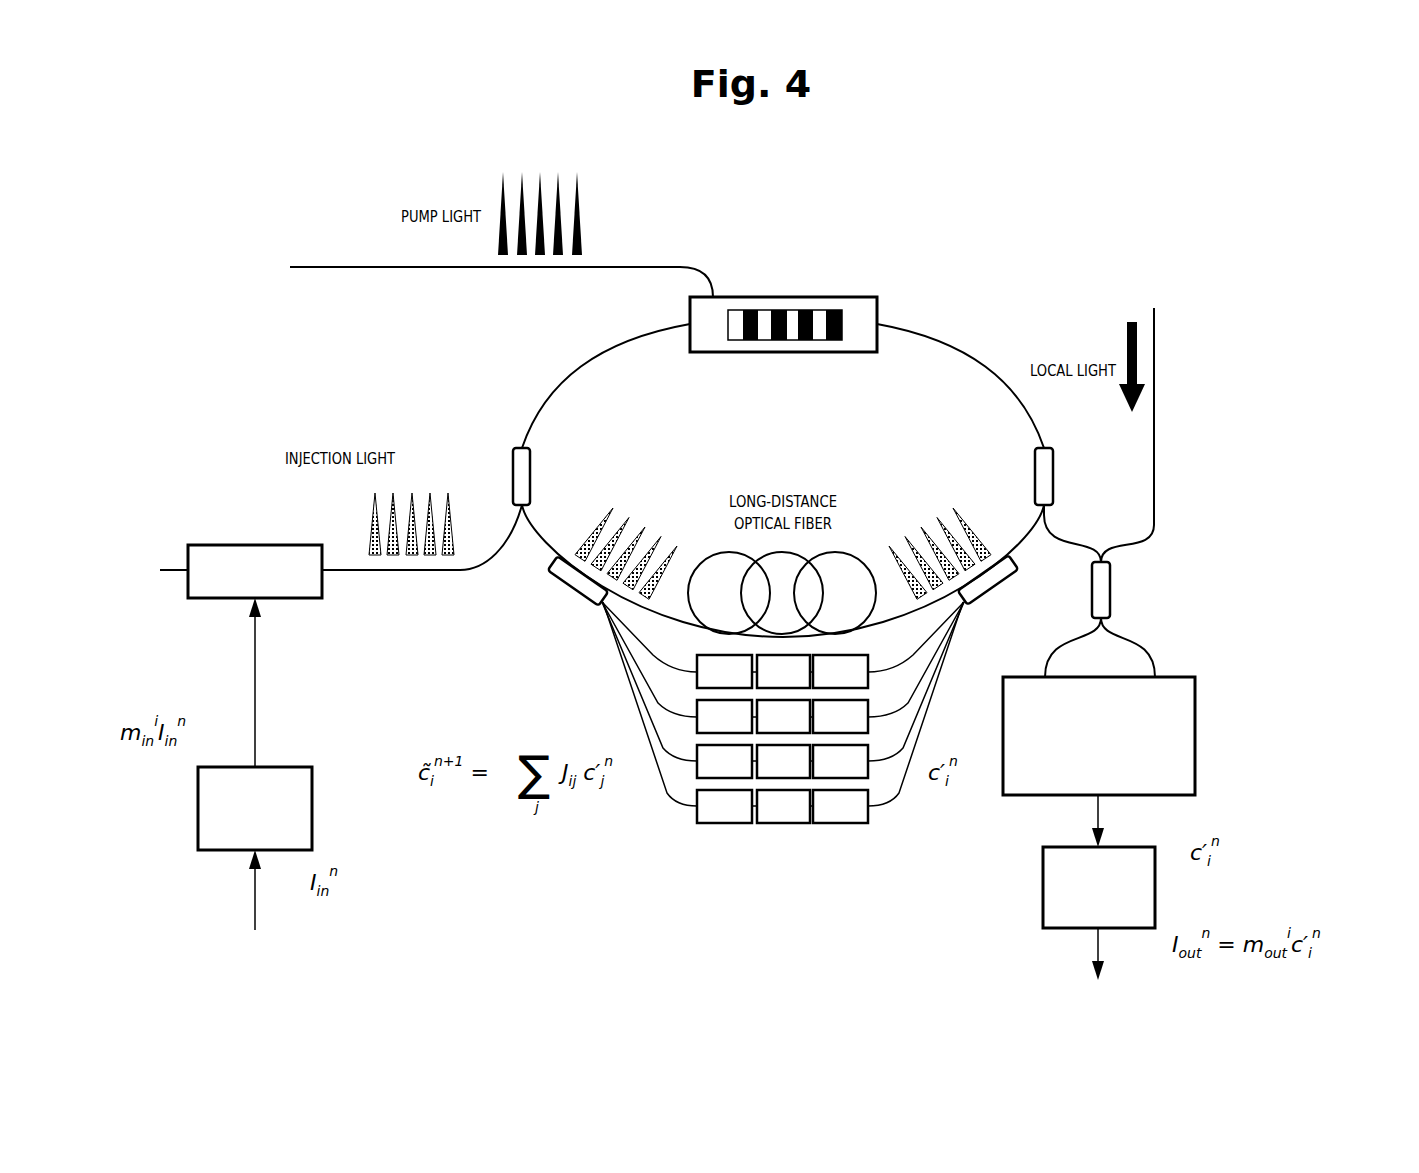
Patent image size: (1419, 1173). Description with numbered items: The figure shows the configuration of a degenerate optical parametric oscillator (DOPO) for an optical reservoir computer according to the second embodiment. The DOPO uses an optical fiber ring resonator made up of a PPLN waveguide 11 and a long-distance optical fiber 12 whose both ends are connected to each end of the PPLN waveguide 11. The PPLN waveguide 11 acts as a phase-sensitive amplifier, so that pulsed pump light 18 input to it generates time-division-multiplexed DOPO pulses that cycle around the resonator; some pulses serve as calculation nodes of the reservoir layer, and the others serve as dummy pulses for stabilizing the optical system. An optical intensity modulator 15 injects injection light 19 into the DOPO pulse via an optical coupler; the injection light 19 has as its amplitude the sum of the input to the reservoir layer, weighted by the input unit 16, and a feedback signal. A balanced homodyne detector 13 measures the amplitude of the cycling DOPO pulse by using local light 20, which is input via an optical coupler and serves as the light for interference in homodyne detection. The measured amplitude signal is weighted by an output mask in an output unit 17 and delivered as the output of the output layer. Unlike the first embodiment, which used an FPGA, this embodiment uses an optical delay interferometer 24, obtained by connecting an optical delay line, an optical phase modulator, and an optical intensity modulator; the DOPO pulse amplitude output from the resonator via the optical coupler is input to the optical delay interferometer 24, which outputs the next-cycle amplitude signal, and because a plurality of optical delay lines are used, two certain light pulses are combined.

The PPLN waveguide 11 is at (858, 297).
The long-distance optical fiber 12 is at (1016, 558).
The balanced homodyne detector 13 is at (1178, 677).
The optical intensity modulator 15 is at (282, 545).
The input unit 16 is at (296, 767).
The output unit 17 is at (1125, 847).
The pump light 18 is at (490, 168).
The injection light 19 is at (362, 490).
The local light 20 is at (1124, 332).
The optical delay interferometer 24 is at (780, 840).